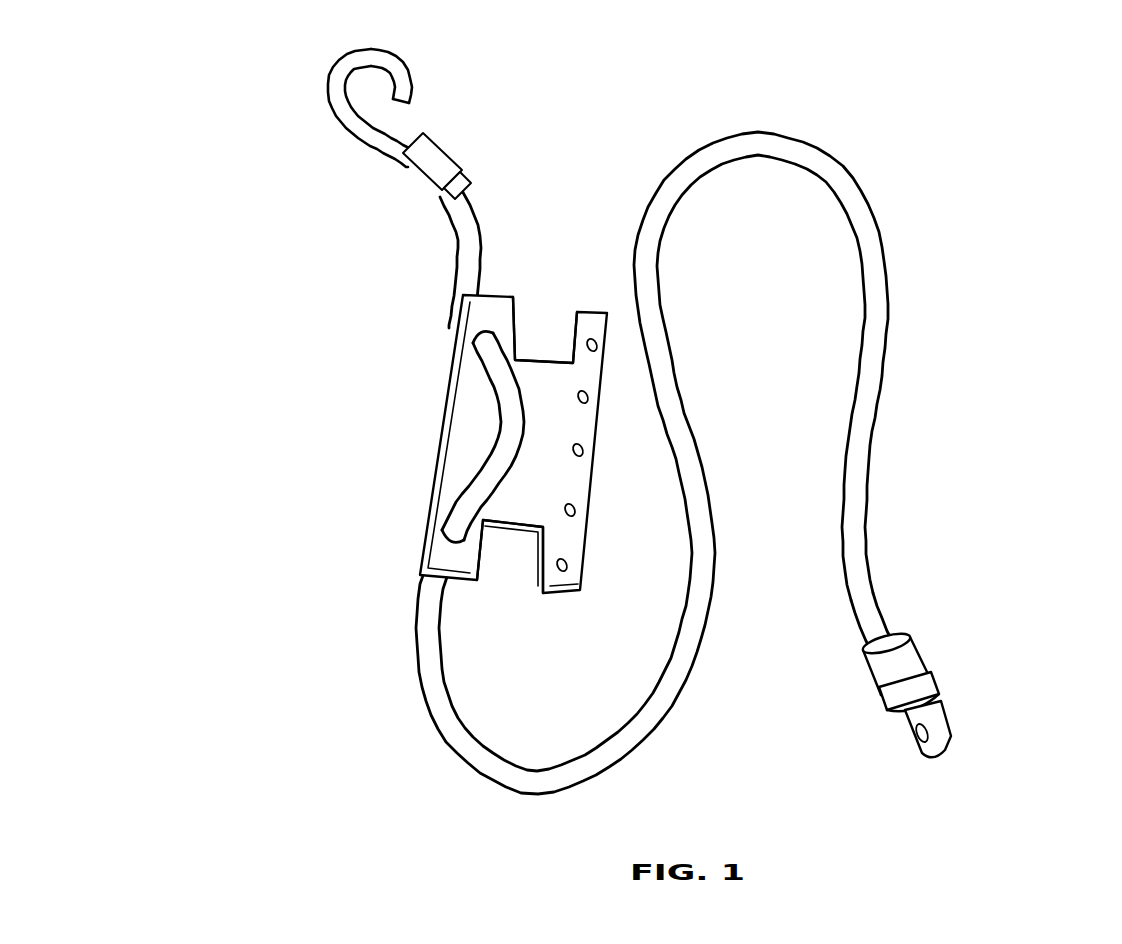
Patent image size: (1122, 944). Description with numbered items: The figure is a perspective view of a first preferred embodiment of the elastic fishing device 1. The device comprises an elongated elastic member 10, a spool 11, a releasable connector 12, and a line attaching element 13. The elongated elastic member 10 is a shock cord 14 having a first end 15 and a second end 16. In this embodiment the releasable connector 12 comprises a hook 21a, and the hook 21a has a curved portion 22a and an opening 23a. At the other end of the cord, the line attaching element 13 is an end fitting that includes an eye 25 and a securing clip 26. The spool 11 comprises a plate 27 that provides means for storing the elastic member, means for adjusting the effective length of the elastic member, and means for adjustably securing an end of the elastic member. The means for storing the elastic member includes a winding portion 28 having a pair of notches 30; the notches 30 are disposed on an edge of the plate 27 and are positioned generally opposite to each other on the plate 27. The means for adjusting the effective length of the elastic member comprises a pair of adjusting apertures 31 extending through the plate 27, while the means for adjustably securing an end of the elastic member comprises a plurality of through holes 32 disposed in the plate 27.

The elastic fishing device 1 is at (940, 244).
The elongated elastic member 10 is at (870, 187).
The spool 11 is at (436, 418).
The releasable connector 12 is at (412, 64).
The line attaching element 13 is at (950, 694).
The shock cord 14 is at (878, 347).
The first end 15 is at (464, 258).
The second end 16 is at (880, 628).
The hook 21a is at (293, 197).
The curved portion 22a is at (402, 82).
The opening 23a is at (404, 120).
The eye 25 is at (915, 742).
The securing clip 26 is at (880, 664).
The plate 27 is at (462, 470).
The winding portion 28 is at (540, 502).
The notches 30 is at (537, 352).
The adjusting apertures 31 is at (480, 343).
The through holes 32 is at (572, 512).